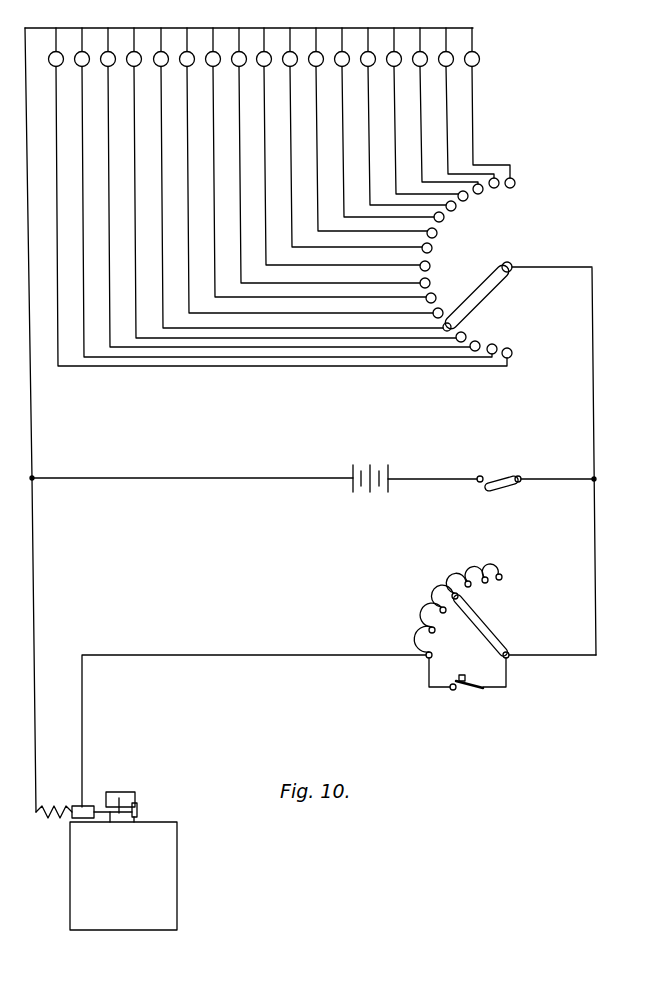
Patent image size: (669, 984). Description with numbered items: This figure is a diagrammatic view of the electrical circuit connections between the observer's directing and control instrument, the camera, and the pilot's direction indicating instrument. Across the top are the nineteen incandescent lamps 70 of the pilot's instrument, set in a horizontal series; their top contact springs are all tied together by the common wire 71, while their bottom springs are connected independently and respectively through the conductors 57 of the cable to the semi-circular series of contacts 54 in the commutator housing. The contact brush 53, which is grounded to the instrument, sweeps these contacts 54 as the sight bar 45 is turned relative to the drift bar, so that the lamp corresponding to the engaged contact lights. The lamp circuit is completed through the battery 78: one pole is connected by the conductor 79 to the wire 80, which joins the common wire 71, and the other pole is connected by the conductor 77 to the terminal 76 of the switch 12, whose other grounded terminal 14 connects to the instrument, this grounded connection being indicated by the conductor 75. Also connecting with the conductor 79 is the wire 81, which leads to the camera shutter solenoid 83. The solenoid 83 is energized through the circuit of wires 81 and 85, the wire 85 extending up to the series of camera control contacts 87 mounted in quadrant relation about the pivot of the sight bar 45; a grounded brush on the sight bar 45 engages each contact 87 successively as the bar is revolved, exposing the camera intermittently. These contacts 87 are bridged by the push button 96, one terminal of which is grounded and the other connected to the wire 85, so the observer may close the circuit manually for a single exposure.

The incandescent lamps 70 is at (393, 51).
The common wire 71 is at (250, 28).
The conductors 57 is at (423, 149).
The contacts 54 is at (458, 208).
The contact brush 53 is at (482, 280).
The wire 80 is at (32, 421).
The wire 81 is at (33, 567).
The conductor 79 is at (219, 479).
The battery 78 is at (375, 492).
The conductor 77 is at (445, 480).
The terminal 76 is at (478, 483).
The switch 12 is at (500, 480).
The switch contact 14 is at (520, 483).
The conductor 75 is at (597, 468).
The wire 85 is at (253, 655).
The electrical contacts 87 is at (442, 629).
The sight bar 45 is at (497, 628).
The push button 96 is at (465, 688).
The solenoid 83 is at (52, 819).